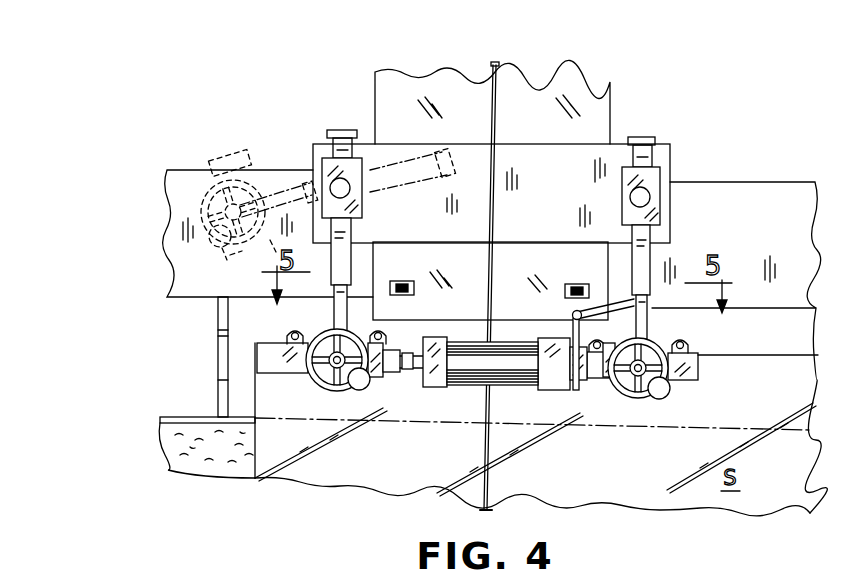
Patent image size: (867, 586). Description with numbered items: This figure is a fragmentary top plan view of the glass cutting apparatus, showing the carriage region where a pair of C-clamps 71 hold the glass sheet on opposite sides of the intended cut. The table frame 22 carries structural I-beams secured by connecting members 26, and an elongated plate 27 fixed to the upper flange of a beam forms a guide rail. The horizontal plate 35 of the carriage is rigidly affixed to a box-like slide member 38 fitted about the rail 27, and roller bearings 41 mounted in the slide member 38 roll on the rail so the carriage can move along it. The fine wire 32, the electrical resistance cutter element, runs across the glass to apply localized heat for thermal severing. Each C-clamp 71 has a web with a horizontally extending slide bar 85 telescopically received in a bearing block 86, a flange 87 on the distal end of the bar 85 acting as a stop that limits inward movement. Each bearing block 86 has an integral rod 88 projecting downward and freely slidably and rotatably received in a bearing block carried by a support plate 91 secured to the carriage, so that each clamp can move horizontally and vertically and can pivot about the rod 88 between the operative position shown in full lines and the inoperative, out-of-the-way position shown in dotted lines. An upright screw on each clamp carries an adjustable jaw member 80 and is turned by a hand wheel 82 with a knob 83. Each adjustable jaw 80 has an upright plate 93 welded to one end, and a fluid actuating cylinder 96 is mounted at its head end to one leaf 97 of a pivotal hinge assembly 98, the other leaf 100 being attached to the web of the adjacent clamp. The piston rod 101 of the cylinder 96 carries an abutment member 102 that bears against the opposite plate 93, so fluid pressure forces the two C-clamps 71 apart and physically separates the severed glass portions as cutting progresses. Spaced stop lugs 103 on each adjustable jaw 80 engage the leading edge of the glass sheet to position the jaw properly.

The frame 22 is at (195, 399).
The connecting members 26 is at (218, 359).
The elongated plate 27 is at (773, 200).
The fine wire 32 is at (490, 97).
The horizontal plate 35 is at (558, 97).
The slide member 38 is at (503, 270).
The roller bearings 41 is at (412, 286).
The C-clamp 71 is at (312, 320).
The adjustable jaw member 80 is at (277, 372).
The hand wheel 82 is at (320, 384).
The knob 83 is at (354, 389).
The slide bar 85 is at (347, 257).
The bearing block 86 is at (330, 168).
The flange 87 is at (347, 130).
The rod 88 is at (362, 212).
The support plate 91 is at (603, 163).
The upright plate 93 is at (393, 374).
The fluid actuating cylinder 96 is at (477, 371).
The leaf 97 is at (571, 390).
The pivotal hinge assembly 98 is at (560, 312).
The leaf 100 is at (597, 304).
The piston rod 101 is at (417, 368).
The abutment member 102 is at (410, 352).
The stop lugs 103 is at (288, 338).